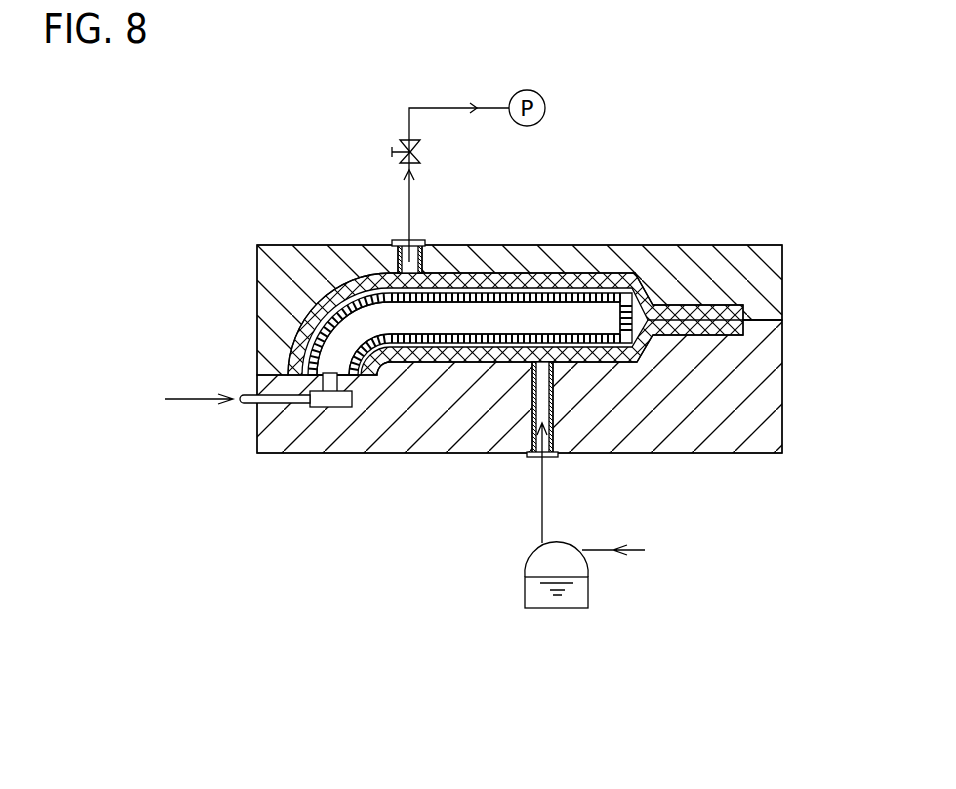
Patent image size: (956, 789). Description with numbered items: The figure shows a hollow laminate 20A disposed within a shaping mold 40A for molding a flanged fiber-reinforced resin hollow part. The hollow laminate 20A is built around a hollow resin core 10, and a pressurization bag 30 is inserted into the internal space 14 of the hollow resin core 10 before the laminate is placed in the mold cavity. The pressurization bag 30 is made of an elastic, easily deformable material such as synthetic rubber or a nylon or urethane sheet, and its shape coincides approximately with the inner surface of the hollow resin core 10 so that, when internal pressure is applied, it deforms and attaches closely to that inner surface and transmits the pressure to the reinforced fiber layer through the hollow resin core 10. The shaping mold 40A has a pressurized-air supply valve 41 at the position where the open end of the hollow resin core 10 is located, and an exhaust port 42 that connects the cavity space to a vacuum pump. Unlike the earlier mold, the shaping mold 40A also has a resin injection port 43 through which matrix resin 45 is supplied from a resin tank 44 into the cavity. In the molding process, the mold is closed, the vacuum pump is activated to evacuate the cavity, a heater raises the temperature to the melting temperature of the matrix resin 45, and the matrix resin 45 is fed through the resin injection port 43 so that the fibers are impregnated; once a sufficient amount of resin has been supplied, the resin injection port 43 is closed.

The hollow resin core 10 is at (481, 293).
The internal space 14 is at (440, 318).
The hollow laminate 20A is at (543, 272).
The pressurization bag 30 is at (470, 333).
The shaping mold 40A is at (750, 257).
The pressurized-air supply valve 41 is at (320, 400).
The exhaust port 42 is at (397, 243).
The resin injection port 43 is at (527, 458).
The resin tank 44 is at (588, 587).
The matrix resin 45 is at (545, 592).